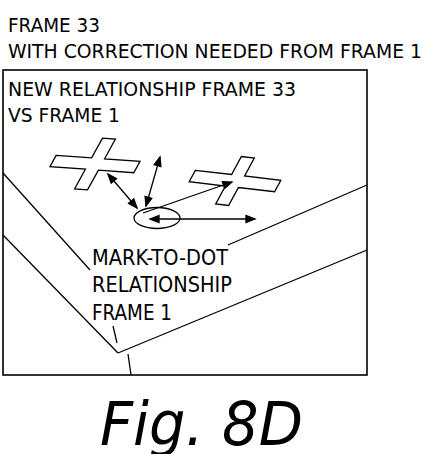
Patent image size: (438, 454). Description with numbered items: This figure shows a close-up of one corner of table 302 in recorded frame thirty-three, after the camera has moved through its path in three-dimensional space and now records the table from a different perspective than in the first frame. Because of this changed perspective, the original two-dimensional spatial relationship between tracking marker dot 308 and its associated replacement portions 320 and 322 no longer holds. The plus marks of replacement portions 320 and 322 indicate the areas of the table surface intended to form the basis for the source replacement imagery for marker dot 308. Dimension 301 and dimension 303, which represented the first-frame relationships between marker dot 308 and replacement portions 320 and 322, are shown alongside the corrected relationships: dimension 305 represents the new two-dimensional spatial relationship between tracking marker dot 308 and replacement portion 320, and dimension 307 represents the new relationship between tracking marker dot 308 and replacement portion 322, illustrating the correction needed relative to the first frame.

The dimension 301 is at (156, 181).
The table 302 is at (310, 250).
The dimension 303 is at (230, 225).
The dimension 305 is at (137, 217).
The dimension 307 is at (177, 210).
The tracking marker dot 308 is at (108, 174).
The replacement portion 320 is at (100, 145).
The replacement portion 322 is at (270, 178).